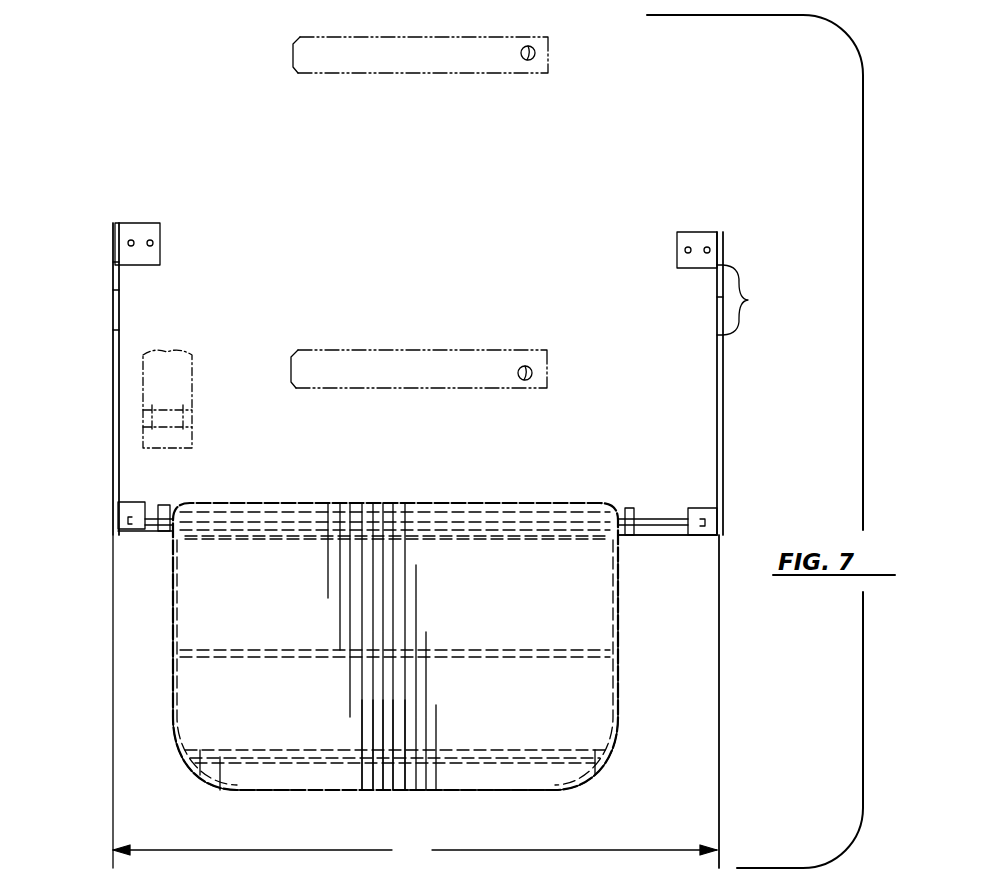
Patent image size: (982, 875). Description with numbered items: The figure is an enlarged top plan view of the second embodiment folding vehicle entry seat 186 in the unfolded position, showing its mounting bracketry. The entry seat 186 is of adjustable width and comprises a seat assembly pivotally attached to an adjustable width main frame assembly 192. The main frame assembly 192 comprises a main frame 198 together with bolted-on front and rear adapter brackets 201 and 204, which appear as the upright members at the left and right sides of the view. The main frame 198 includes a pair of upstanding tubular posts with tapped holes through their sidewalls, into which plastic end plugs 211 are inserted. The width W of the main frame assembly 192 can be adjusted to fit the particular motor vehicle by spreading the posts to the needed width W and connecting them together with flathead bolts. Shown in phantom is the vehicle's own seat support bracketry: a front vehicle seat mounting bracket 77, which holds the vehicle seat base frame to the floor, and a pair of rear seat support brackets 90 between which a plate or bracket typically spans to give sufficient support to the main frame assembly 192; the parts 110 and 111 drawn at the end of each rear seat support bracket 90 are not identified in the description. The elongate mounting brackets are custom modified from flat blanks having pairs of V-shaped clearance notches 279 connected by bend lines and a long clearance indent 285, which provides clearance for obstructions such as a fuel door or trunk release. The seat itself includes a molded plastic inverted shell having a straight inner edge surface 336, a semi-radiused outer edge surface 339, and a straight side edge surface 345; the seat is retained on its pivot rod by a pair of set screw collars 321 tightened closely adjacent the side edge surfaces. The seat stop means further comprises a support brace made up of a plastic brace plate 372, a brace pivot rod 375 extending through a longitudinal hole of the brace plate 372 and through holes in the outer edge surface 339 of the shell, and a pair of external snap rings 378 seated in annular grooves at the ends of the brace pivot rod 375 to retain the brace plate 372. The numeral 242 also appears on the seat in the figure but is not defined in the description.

The width of main frame assembly W is at (415, 852).
The front vehicle seat mounting bracket 77 is at (186, 402).
The rear seat support bracket 90 is at (403, 72).
The fastener 110 is at (535, 48).
The washer 111 is at (532, 58).
The entry seat 186 is at (624, 690).
The main frame assembly 192 is at (735, 455).
The main frame 198 is at (668, 538).
The front adapter bracket 201 is at (113, 352).
The rear adapter bracket 204 is at (734, 361).
The plastic end plug 211 is at (120, 522).
The left side wall 242 is at (173, 600).
The V-shaped clearance notch 279 is at (116, 330).
The long clearance indent 285 is at (113, 437).
The set screw collar 321 is at (165, 512).
The straight inner edge surface 336 is at (385, 503).
The semi-radiused outer edge surface 339 is at (375, 790).
The straight side edge surface 345 is at (618, 607).
The brace plate 372 is at (512, 713).
The brace pivot rod 375 is at (220, 757).
The external snap ring 378 is at (198, 764).